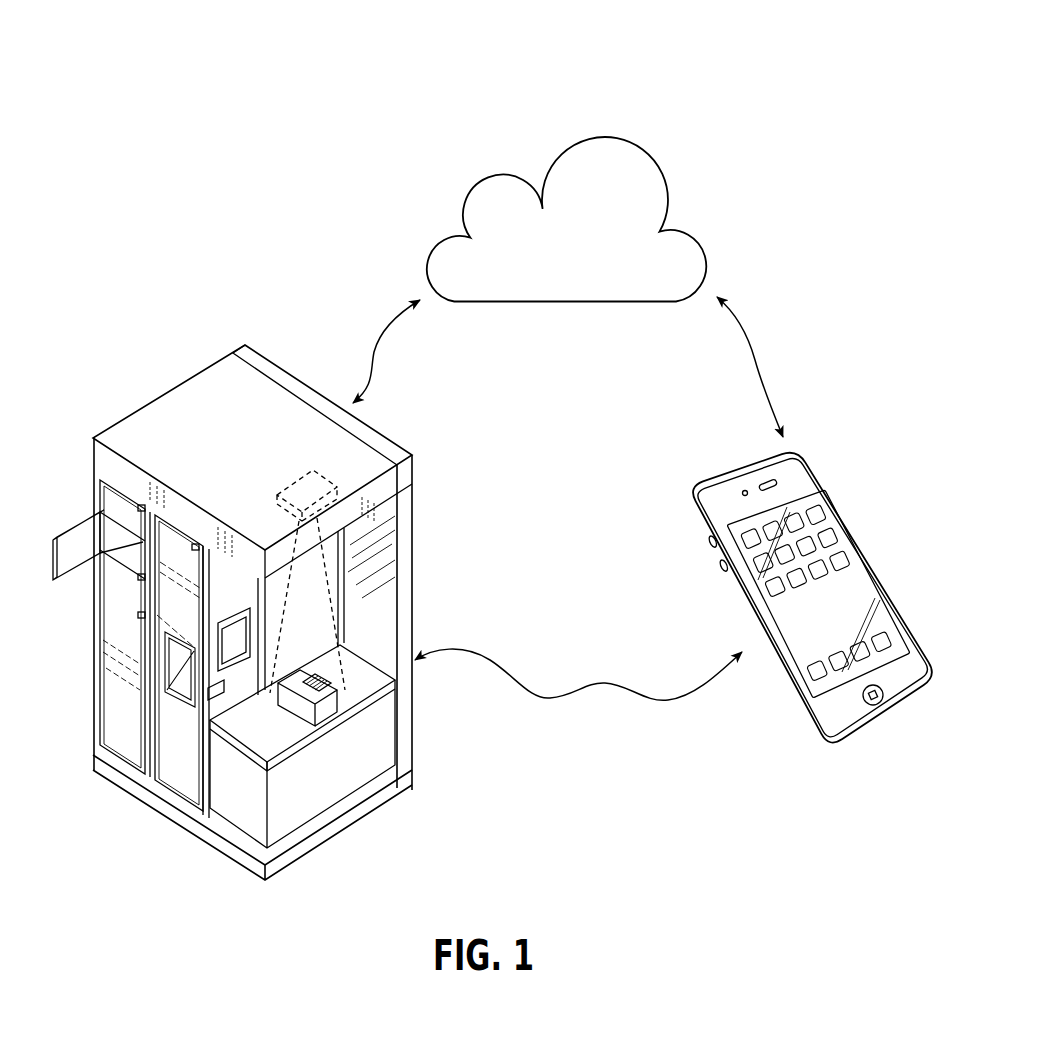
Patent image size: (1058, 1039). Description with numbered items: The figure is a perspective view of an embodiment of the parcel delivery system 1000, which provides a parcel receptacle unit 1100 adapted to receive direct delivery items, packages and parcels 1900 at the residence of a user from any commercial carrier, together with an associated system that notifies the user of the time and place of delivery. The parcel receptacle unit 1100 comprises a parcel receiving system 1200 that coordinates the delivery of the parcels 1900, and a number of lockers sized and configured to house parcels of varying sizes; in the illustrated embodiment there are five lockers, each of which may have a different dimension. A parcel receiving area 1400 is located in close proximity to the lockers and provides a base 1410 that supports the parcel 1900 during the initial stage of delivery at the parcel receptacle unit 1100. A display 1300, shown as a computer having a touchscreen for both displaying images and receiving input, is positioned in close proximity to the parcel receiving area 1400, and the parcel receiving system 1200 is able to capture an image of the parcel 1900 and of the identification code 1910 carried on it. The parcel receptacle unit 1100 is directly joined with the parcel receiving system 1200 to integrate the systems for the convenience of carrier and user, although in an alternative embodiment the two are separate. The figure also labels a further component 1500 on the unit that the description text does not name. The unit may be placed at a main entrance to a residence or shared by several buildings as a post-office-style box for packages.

The parcel delivery system 1000 is at (675, 117).
The parcel receptacle unit 1100 is at (254, 607).
The parcel receiving system 1200 is at (317, 487).
The display 1300 is at (218, 661).
The parcel receiving area 1400 is at (365, 627).
The base 1410 is at (240, 733).
The tray compartment 1500 is at (120, 592).
The parcel 1900 is at (323, 678).
The identification code 1910 is at (323, 695).